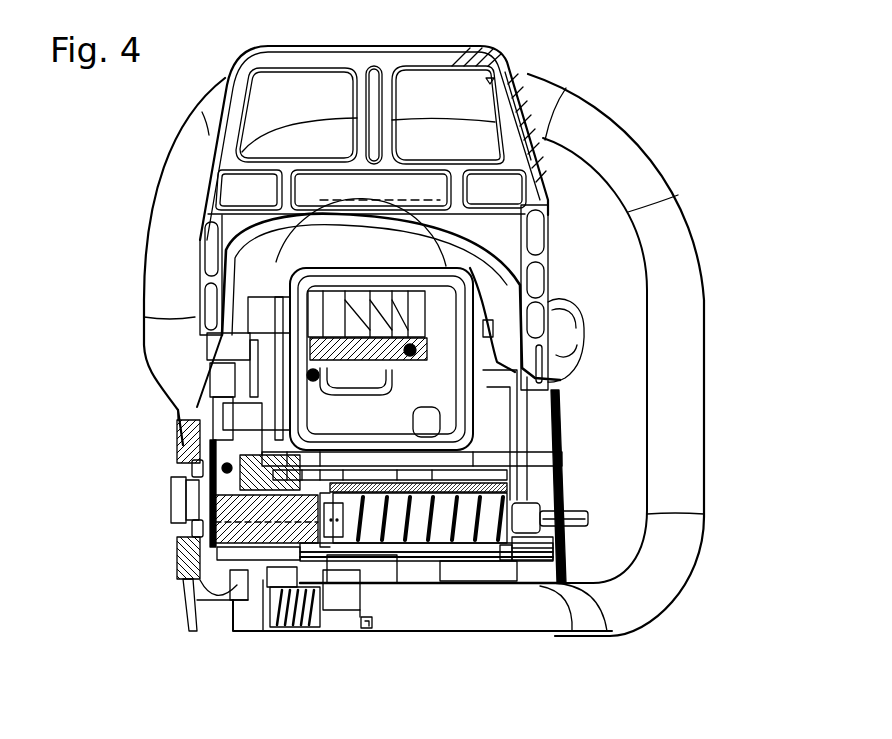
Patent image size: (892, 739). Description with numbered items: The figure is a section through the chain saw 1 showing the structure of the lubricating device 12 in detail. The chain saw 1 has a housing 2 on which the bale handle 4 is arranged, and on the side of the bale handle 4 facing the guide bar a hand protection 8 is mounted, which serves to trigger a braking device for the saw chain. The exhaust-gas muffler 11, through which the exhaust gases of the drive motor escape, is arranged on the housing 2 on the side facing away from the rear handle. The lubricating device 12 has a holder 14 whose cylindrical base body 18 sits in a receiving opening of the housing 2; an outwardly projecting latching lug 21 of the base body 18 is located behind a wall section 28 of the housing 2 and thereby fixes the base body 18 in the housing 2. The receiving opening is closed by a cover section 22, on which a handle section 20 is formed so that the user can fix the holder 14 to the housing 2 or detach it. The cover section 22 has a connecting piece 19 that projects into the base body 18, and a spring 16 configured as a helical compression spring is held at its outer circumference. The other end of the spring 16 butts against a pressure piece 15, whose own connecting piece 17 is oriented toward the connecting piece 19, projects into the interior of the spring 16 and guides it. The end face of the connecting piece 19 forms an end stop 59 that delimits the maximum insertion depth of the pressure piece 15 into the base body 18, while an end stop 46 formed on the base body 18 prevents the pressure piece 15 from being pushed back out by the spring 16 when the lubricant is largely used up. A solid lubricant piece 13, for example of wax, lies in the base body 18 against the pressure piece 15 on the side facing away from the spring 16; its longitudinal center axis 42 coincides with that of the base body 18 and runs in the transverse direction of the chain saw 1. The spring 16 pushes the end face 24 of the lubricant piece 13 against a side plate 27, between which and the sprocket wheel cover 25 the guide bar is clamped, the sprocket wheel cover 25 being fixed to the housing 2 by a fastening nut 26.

The chain saw 1 is at (143, 140).
The housing 2 is at (518, 418).
The bale handle 4 is at (612, 131).
The hand protection 8 is at (341, 56).
The exhaust-gas muffler 11 is at (450, 370).
The lubricating device 12 is at (180, 563).
The lubricant piece 13 is at (265, 518).
The holder 14 is at (523, 540).
The pressure piece 15 is at (328, 563).
The spring 16 is at (383, 527).
The connecting piece 17 is at (337, 537).
The base body 18 is at (518, 458).
The connecting piece 19 is at (552, 575).
The handle section 20 is at (577, 530).
The latching lug 21 is at (470, 557).
The cover section 22 is at (557, 477).
The end face 24 is at (187, 520).
The sprocket wheel cover 25 is at (185, 443).
The fastening nut 26 is at (180, 498).
The side plate 27 is at (197, 470).
The wall section 28 is at (497, 557).
The longitudinal center axis 42 is at (240, 520).
The end stop 46 is at (300, 560).
The end stop 59 is at (506, 548).